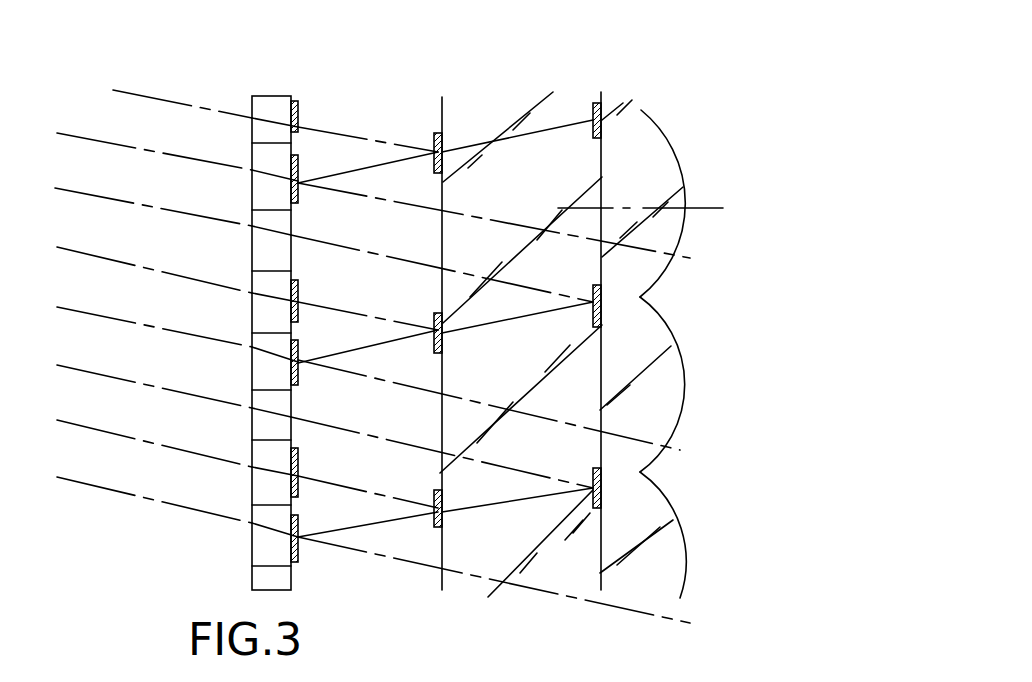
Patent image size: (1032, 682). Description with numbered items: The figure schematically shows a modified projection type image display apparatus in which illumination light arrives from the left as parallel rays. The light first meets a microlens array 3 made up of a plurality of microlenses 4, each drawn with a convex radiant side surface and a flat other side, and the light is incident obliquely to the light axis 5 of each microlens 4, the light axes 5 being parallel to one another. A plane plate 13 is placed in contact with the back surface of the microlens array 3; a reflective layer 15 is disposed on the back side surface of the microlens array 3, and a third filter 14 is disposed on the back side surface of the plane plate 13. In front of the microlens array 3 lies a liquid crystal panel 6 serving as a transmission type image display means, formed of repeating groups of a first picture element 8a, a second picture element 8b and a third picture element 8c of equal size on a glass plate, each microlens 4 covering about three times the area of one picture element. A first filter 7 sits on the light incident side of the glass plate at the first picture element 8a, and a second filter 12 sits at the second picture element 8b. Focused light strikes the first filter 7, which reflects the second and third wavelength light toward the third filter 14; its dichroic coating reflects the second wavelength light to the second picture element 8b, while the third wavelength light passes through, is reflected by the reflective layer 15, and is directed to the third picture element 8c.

The microlens array 3 is at (628, 125).
The microlens 4 is at (668, 132).
The light axis 5 is at (700, 207).
The liquid crystal panel 6 is at (268, 97).
The first filter 7 is at (300, 200).
The first picture element 8a is at (258, 187).
The second picture element 8b is at (258, 128).
The third picture element 8c is at (258, 247).
The second filter 12 is at (300, 106).
The plane plate 13 is at (527, 97).
The third filter 14 is at (436, 135).
The reflective layer 15 is at (600, 102).